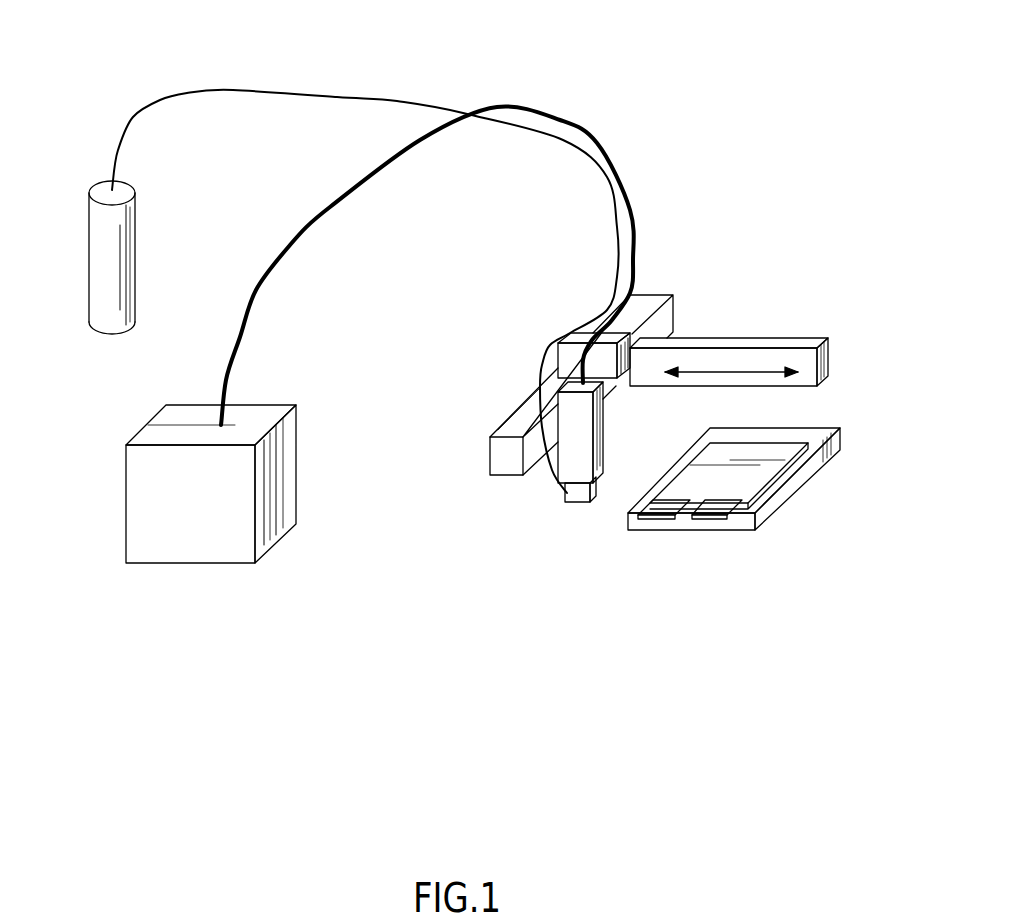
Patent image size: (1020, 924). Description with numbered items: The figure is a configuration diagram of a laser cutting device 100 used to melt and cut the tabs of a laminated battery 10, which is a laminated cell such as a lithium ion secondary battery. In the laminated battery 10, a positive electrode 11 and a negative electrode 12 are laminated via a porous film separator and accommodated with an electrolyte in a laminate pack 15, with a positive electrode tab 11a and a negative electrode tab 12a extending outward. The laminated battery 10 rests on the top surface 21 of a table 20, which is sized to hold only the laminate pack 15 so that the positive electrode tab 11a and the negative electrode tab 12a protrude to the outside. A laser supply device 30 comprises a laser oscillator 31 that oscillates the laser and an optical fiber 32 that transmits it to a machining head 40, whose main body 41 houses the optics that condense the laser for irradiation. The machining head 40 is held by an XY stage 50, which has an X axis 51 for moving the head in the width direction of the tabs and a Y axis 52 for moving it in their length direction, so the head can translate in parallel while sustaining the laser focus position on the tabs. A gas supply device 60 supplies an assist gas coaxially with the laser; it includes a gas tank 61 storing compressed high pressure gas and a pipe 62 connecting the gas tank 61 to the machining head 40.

The laser cutting device 100 is at (823, 108).
The gas supply device 60 is at (82, 234).
The gas tank 61 is at (97, 311).
The pipe 62 is at (185, 93).
The laser supply device 30 is at (195, 527).
The laser oscillator 31 is at (139, 567).
The optical fiber 32 is at (256, 292).
The machining head 40 is at (544, 484).
The main body 41 is at (567, 470).
The XY stage 50 is at (672, 350).
The X axis 51 is at (740, 342).
The Y axis 52 is at (655, 302).
The laminated battery 10 is at (741, 481).
The table 20 is at (803, 477).
The top surface 21 is at (817, 443).
The laminate pack 15 is at (757, 475).
The positive electrode 11 is at (702, 523).
The positive electrode tab 11a is at (718, 517).
The negative electrode 12 is at (640, 518).
The negative electrode tab 12a is at (657, 517).